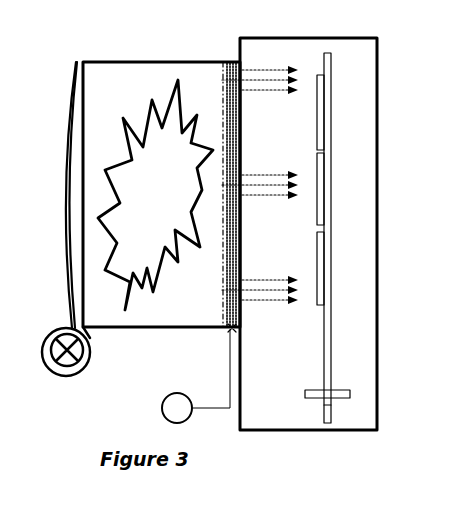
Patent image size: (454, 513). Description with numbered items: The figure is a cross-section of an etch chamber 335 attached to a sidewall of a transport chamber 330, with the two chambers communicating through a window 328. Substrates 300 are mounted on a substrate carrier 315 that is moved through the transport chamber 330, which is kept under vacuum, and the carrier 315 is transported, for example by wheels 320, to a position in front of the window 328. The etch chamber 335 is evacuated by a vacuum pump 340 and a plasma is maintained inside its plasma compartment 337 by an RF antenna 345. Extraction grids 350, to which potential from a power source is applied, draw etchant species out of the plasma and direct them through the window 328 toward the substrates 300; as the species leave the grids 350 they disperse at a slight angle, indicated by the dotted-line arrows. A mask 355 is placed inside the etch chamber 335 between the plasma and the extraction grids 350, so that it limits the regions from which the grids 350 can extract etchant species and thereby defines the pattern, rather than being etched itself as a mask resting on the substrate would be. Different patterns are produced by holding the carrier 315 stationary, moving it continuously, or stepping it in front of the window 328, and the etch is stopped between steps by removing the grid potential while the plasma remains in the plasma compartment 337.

The substrates 300 is at (329, 150).
The substrate carrier 315 is at (332, 178).
The wheels 320 is at (340, 388).
The window 328 is at (241, 136).
The transport chamber 330 is at (321, 38).
The etch chamber 335 is at (190, 36).
The plasma compartment 337 is at (103, 70).
The vacuum pump 340 is at (91, 363).
The RF antenna 345 is at (70, 72).
The extraction grids 350 is at (229, 334).
The mask 355 is at (223, 262).